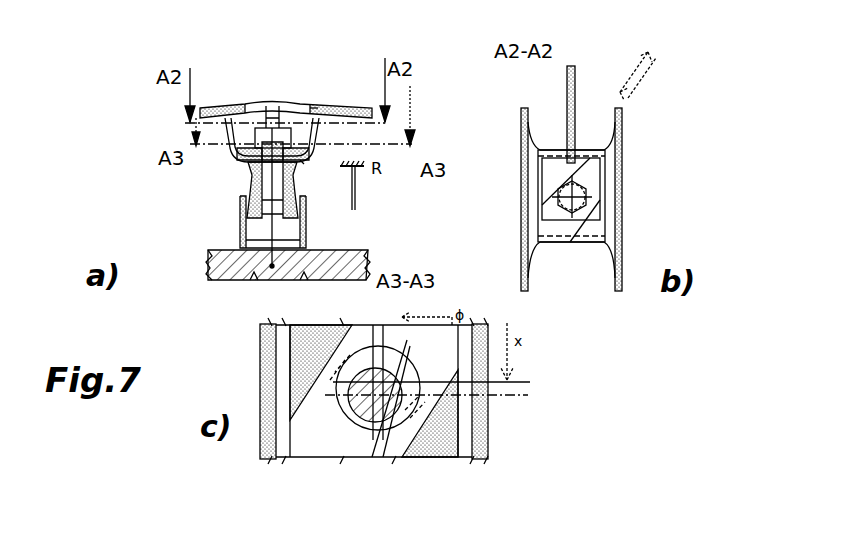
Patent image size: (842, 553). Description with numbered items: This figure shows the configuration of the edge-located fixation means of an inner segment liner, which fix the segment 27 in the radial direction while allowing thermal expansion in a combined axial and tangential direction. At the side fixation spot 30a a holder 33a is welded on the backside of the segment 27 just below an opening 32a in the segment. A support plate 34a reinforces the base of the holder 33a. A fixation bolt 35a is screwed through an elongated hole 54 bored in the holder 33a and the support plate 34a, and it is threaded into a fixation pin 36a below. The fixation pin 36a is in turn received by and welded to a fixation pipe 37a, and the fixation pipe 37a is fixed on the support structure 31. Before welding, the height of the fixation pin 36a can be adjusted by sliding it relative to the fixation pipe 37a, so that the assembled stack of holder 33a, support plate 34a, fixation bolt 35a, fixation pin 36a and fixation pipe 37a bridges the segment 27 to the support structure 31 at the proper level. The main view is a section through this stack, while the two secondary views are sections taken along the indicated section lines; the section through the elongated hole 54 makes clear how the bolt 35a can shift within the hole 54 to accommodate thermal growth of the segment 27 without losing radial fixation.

The side fixation spot 30a is at (340, 243).
The opening 32a is at (285, 106).
The segment 27 is at (312, 108).
The elongated hole 54 is at (300, 160).
The holder 33a is at (228, 130).
The support plate 34a is at (242, 158).
The fixation bolt 35a is at (275, 157).
The fixation pin 36a is at (307, 198).
The fixation pipe 37a is at (244, 220).
The support structure 31 is at (260, 279).